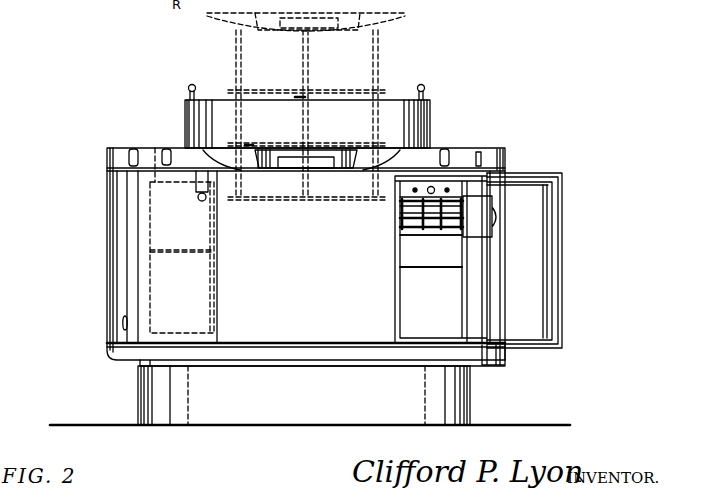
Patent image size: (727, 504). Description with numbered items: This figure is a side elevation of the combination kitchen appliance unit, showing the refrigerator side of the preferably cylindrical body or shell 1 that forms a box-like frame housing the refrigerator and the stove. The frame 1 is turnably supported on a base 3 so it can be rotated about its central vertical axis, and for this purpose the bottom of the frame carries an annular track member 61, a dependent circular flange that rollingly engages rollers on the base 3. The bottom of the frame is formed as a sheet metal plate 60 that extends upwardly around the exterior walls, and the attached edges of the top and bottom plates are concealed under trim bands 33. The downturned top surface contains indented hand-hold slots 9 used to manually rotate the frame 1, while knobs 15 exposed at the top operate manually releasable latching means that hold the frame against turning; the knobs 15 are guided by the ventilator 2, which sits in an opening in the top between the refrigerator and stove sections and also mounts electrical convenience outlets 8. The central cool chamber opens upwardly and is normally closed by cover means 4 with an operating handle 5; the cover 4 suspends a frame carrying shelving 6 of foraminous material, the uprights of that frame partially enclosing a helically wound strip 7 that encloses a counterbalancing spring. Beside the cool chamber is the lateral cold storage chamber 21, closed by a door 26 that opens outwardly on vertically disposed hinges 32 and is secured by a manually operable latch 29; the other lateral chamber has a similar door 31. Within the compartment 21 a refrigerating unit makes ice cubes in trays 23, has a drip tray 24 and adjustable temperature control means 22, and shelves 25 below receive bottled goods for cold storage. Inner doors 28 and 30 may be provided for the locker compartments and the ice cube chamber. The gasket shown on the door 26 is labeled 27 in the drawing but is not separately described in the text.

The body or shell 1 is at (122, 238).
The ventilator 2 is at (418, 121).
The base 3 is at (458, 403).
The cover means 4 is at (362, 148).
The operating handle 5 is at (343, 18).
The shelving 6 is at (322, 92).
The helically wound strip 7 is at (236, 60).
The electrical convenience outlets 8 is at (300, 98).
The hand-holds 9 is at (133, 151).
The knobs 15 is at (192, 84).
The cold storage chamber 21 is at (435, 328).
The adjustable temperature control means 22 is at (410, 193).
The trays 23 is at (408, 218).
The drip tray 24 is at (440, 232).
The shelves 25 is at (419, 266).
The door 26 is at (562, 218).
The gasket 27 is at (548, 292).
The inner door 28 is at (488, 203).
The latches 29 is at (203, 201).
The inner door 30 is at (204, 277).
The door 31 is at (198, 318).
The hinges 32 is at (123, 327).
The trim bands 33 is at (110, 170).
The sheet metal plate 60 is at (490, 360).
The annular track member 61 is at (138, 365).